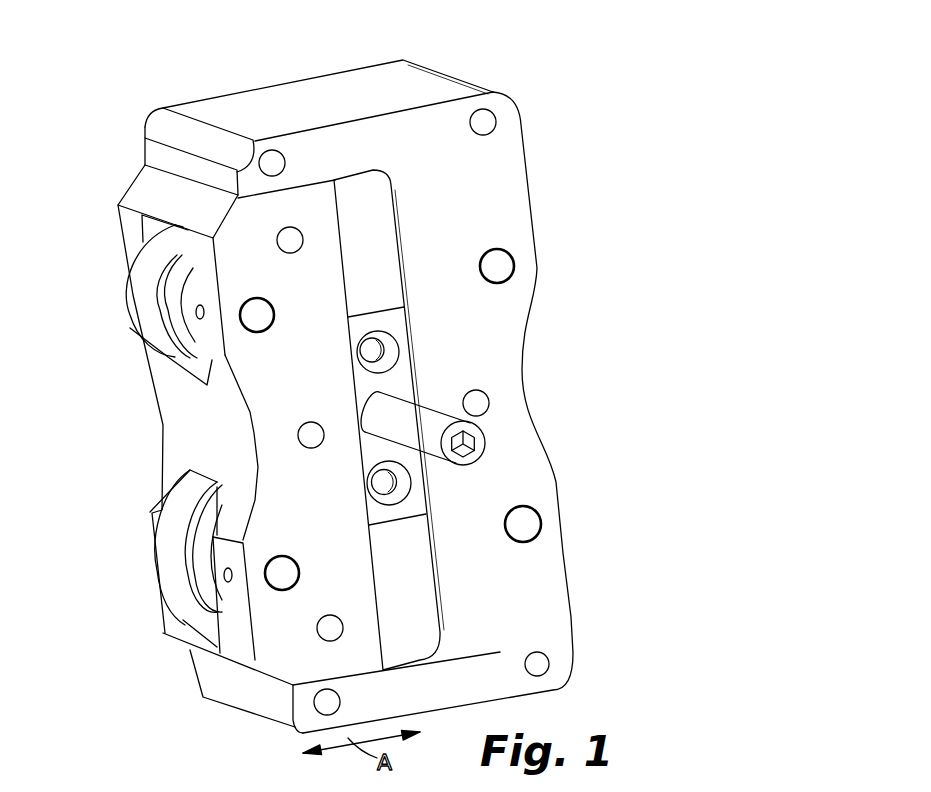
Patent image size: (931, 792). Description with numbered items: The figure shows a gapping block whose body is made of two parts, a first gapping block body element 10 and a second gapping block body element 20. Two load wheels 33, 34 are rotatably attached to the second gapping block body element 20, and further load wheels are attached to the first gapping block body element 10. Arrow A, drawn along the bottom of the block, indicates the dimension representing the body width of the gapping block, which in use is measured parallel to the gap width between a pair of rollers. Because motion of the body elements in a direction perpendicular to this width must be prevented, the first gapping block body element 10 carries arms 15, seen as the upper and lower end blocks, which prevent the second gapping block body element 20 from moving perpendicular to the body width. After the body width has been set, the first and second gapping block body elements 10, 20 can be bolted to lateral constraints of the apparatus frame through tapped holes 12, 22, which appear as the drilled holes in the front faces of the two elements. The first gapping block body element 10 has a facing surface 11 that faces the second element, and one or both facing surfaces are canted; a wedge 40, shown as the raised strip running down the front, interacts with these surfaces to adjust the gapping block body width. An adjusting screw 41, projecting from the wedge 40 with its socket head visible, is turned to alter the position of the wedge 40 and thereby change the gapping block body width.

The first gapping block body element 10 is at (413, 82).
The facing surface 11 is at (405, 245).
The tapped holes 12 is at (278, 157).
The arms 15 is at (210, 108).
The second gapping block body element 20 is at (143, 192).
The tapped holes 22 is at (290, 240).
The load wheel 33 is at (143, 305).
The load wheel 34 is at (167, 568).
The wedge 40 is at (380, 222).
The adjusting screw 41 is at (417, 417).